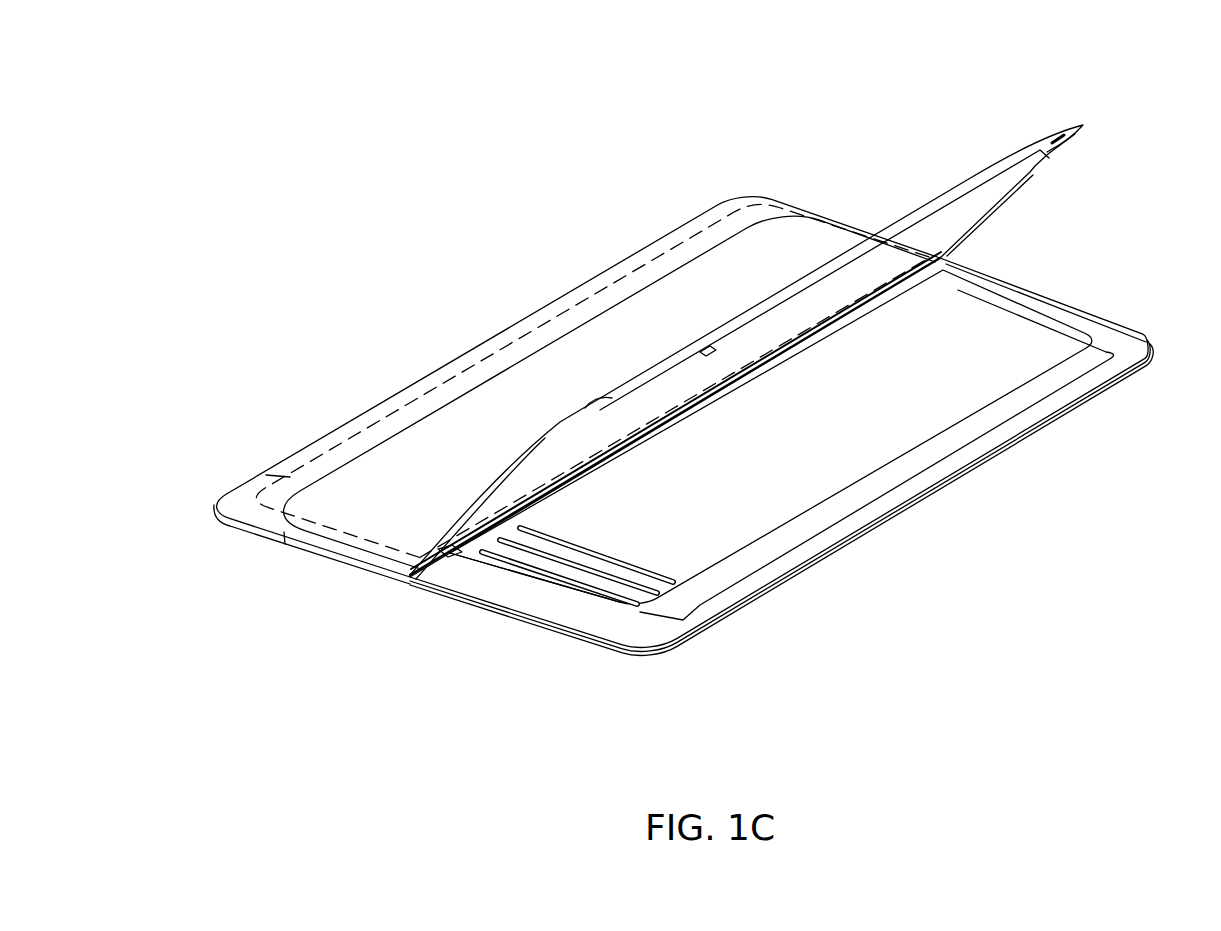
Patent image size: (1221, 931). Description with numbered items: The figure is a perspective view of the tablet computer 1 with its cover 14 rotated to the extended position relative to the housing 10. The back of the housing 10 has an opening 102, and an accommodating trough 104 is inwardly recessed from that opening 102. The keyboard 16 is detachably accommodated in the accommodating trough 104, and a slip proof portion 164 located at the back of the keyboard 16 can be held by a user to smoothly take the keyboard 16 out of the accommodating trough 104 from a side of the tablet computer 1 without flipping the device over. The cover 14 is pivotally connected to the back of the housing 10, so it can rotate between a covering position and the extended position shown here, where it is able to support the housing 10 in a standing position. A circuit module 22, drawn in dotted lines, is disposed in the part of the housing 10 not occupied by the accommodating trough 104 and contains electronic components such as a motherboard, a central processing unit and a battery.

The tablet computer 1 is at (683, 398).
The housing 10 is at (571, 291).
The circuit module 22 is at (647, 262).
The cover 14 is at (963, 182).
The keyboard 16 is at (843, 479).
The opening 102 is at (510, 606).
The accommodating trough 104 is at (441, 586).
The slip proof portion 164 is at (590, 590).